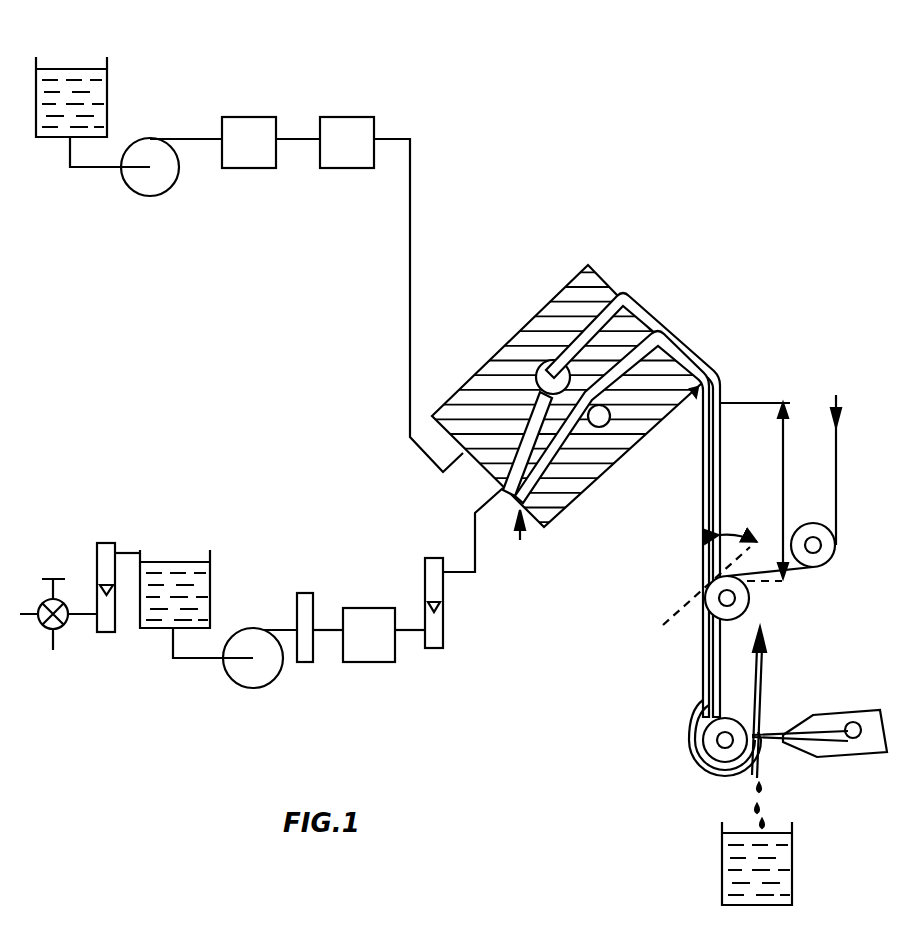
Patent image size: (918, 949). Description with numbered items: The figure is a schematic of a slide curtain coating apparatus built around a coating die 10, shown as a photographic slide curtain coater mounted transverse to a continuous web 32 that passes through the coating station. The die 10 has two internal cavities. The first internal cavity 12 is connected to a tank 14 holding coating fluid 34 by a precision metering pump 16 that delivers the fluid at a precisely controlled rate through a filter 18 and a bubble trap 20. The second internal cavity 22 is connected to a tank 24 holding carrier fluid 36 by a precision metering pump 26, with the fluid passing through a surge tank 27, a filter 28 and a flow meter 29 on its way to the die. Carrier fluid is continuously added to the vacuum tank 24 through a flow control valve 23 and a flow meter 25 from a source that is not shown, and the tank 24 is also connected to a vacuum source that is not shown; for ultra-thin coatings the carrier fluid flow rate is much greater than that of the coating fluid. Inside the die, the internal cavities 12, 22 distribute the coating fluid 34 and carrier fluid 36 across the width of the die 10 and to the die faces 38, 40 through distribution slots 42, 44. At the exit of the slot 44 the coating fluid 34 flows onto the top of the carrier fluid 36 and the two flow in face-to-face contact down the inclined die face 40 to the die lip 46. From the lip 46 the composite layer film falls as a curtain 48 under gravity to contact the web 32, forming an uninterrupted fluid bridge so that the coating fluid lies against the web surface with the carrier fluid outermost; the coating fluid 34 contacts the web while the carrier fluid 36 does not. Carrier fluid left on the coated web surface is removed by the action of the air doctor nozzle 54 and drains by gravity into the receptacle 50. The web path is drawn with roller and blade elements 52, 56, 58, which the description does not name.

The coating die 10 is at (507, 551).
The internal cavity 12 is at (562, 358).
The tank 14 is at (108, 90).
The precision metering pump 16 is at (150, 178).
The filter 18 is at (255, 128).
The bubble trap 20 is at (350, 128).
The internal cavity 22 is at (595, 427).
The flow control valve 23 is at (58, 633).
The tank 24 is at (213, 588).
The flow meter 25 is at (102, 627).
The precision metering pump 26 is at (248, 677).
The surge tank 27 is at (303, 597).
The filter 28 is at (360, 653).
The flow meter 29 is at (433, 640).
The continuous web 32 is at (840, 468).
The coating fluid 34 is at (88, 66).
The carrier fluid 36 is at (190, 557).
The die face 38 is at (642, 303).
The inclined die face 40 is at (693, 357).
The distribution slot 42 is at (595, 318).
The distribution slot 44 is at (607, 395).
The die lip 46 is at (693, 398).
The curtain 48 is at (676, 533).
The receptacle 50 is at (785, 867).
The doctor blade 52 is at (772, 750).
The air doctor nozzle 54 is at (847, 742).
The lower roller 56 is at (735, 725).
The upper roller 58 is at (750, 598).